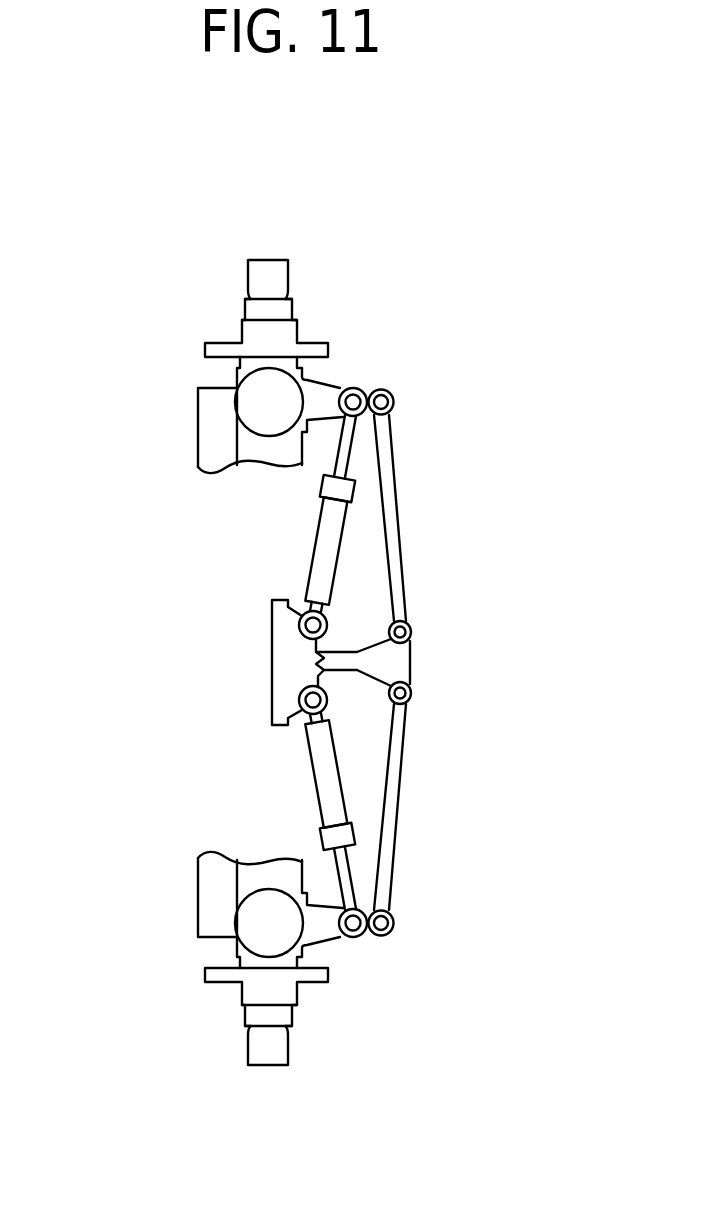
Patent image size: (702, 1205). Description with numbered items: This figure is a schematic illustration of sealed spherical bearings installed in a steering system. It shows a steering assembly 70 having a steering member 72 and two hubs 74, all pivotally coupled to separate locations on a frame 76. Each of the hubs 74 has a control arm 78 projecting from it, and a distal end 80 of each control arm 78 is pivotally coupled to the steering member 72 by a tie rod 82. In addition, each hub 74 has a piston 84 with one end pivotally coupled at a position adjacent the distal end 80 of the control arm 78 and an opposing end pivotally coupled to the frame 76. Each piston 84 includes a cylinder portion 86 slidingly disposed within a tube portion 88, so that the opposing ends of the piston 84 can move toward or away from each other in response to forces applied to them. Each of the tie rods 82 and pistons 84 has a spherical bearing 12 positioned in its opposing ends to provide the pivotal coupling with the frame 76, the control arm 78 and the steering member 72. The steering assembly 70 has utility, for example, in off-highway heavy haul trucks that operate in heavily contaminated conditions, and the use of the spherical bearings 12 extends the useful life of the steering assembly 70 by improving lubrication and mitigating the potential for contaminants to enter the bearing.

The steering assembly 70 is at (342, 217).
The steering member 72 is at (398, 662).
The hub 74 is at (201, 311).
The frame 76 is at (218, 450).
The control arm 78 is at (373, 393).
The distal end 80 is at (434, 651).
The tie rod 82 is at (397, 503).
The piston 84 is at (276, 662).
The cylinder portion 86 is at (333, 455).
The tube portion 88 is at (330, 538).
The spherical bearing 12 is at (353, 402).